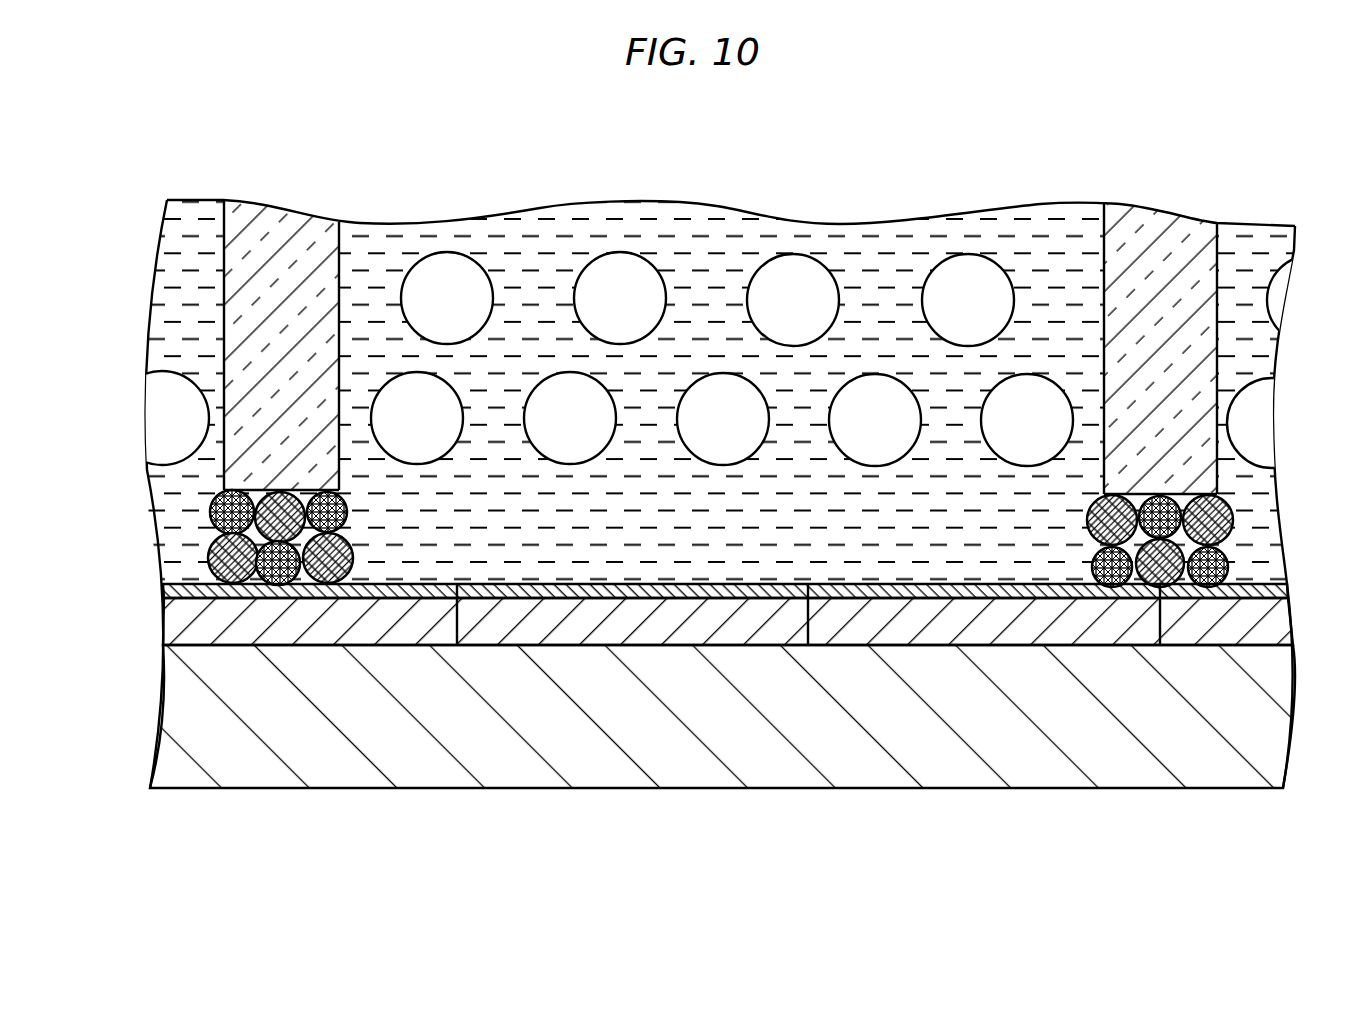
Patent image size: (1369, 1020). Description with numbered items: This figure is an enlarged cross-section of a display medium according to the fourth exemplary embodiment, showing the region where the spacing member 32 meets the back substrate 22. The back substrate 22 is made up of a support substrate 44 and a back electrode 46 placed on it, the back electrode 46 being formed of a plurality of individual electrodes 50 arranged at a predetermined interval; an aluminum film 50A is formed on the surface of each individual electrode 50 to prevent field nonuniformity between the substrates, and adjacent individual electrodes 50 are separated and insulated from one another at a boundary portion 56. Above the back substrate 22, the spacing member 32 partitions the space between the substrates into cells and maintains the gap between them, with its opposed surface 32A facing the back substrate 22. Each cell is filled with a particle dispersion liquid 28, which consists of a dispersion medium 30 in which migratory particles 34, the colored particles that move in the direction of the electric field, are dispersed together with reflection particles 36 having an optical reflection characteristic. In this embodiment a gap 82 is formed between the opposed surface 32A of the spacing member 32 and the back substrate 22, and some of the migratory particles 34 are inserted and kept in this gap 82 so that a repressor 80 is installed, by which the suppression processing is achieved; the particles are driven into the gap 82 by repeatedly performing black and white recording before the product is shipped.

The back substrate 22 is at (663, 721).
The particle dispersion liquid 28 is at (720, 457).
The dispersion medium 30 is at (549, 238).
The spacing member 32 is at (720, 314).
The opposed surface 32A is at (267, 493).
The migratory particles 34 is at (724, 533).
The reflection particles 36 is at (783, 290).
The support substrate 44 is at (193, 715).
The back electrode 46 is at (690, 721).
The individual electrodes 50 is at (289, 633).
The aluminum film 50A is at (355, 597).
The boundary portion 56 is at (468, 582).
The repressor 80 is at (203, 530).
The gap 82 is at (200, 552).